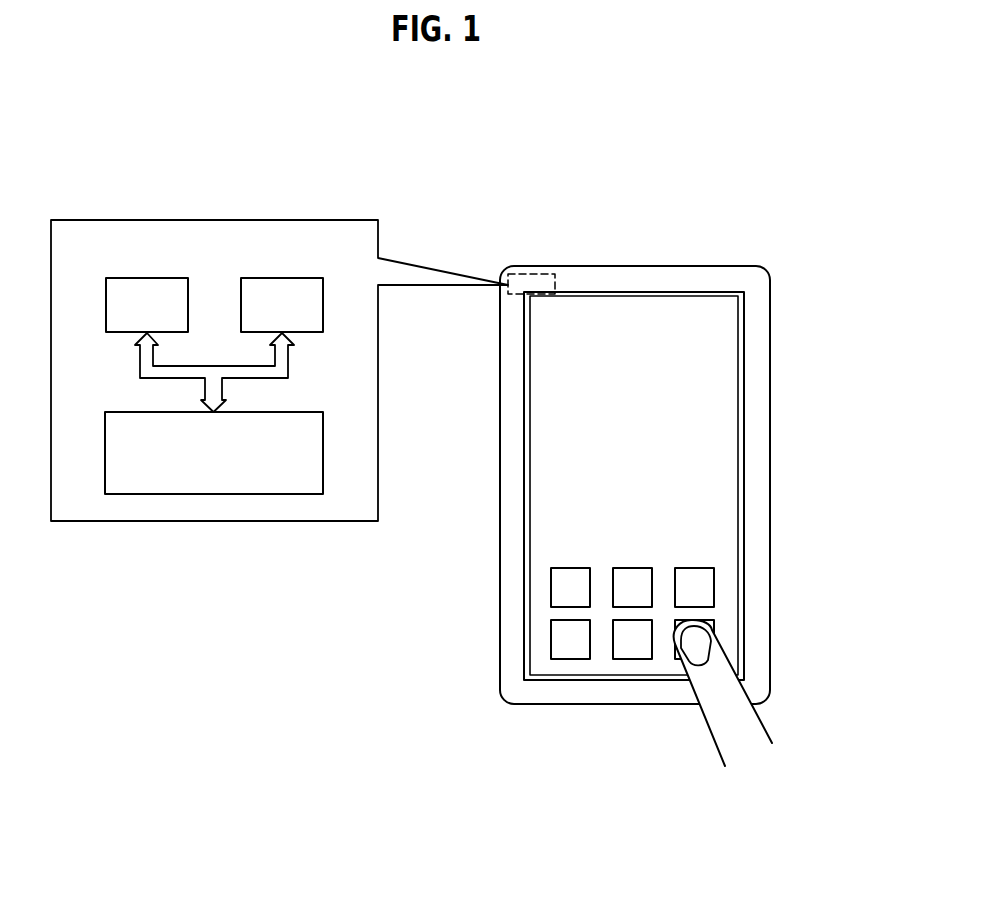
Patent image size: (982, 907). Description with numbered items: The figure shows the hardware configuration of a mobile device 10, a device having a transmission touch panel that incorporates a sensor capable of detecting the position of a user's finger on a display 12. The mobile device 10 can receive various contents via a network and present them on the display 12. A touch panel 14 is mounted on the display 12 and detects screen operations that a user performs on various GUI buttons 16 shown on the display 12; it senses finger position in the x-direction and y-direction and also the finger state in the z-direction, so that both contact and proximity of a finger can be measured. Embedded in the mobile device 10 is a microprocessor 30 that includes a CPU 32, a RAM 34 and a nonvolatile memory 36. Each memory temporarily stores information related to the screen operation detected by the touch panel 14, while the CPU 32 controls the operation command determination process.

The mobile device 10 is at (642, 214).
The display 12 is at (703, 352).
The touch panel 14 is at (745, 427).
The GUI buttons 16 is at (713, 590).
The microprocessor 30 is at (212, 220).
The CPU 32 is at (281, 278).
The RAM 34 is at (146, 278).
The nonvolatile memory 36 is at (307, 412).